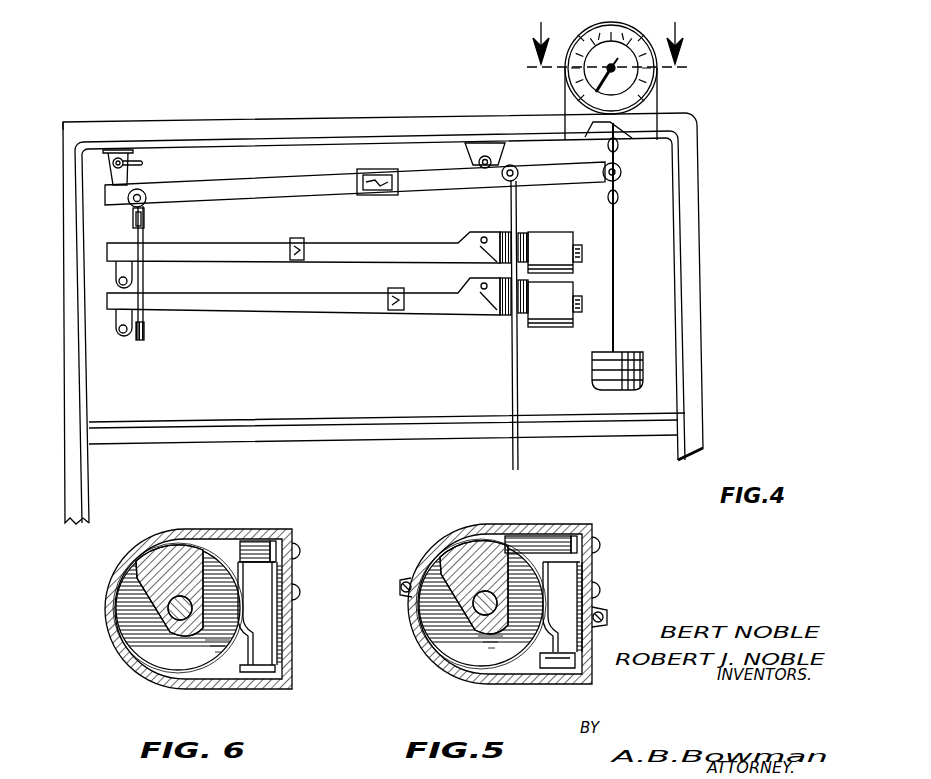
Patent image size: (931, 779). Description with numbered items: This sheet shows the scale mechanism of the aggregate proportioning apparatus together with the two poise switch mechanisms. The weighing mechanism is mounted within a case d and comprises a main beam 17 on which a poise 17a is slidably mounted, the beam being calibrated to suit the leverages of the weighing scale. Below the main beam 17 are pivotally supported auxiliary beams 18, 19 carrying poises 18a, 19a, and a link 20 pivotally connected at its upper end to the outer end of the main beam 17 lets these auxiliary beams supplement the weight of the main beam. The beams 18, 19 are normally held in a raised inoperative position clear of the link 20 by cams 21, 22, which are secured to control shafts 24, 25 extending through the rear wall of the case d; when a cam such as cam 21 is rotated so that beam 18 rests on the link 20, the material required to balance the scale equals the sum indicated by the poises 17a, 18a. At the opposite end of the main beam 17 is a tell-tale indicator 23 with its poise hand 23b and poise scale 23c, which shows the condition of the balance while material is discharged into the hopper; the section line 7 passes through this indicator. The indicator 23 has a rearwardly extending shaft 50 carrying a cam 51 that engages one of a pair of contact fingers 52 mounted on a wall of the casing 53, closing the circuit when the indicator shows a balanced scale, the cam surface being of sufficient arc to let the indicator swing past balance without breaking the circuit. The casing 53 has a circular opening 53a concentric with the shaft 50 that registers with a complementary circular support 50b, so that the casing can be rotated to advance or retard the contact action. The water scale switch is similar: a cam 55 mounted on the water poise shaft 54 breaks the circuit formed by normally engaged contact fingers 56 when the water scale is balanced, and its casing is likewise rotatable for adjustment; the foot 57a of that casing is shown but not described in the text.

In FIG. 4, the case d is at (186, 134).
In FIG. 4, the section line 7- 7 is at (607, 44).
In FIG. 4, the main scale beam 17 is at (297, 181).
In FIG. 4, the poise 17a is at (378, 170).
In FIG. 4, the auxiliary beam 18 is at (342, 247).
In FIG. 4, the poise 18a is at (296, 242).
In FIG. 4, the auxiliary beam 19 is at (320, 293).
In FIG. 4, the poise 19a is at (400, 290).
In FIG. 4, the beam link 20 is at (146, 338).
In FIG. 4, the beam reset cam 21 is at (137, 256).
In FIG. 4, the beam reset cam 22 is at (137, 312).
In FIG. 4, the tell-tale indicator 23 is at (575, 74).
In FIG. 4, the poise hand 23b is at (592, 96).
In FIG. 4, the poise scale 23c is at (625, 47).
In FIG. 4, the control shaft 24 is at (140, 279).
In FIG. 4, the control shaft 25 is at (124, 332).
In FIG. 6, the aggregate poise shaft 50 is at (128, 666).
In FIG. 6, the circular support 50b is at (188, 664).
In FIG. 6, the cam 51 is at (202, 533).
In FIG. 6, the contact fingers 52 is at (275, 628).
In FIG. 6, the casing 53 is at (258, 530).
In FIG. 6, the circular opening 53a is at (156, 672).
In FIG. 5, the water poise shaft 54 is at (472, 620).
In FIG. 5, the cam 55 is at (490, 537).
In FIG. 5, the contact fingers 56 is at (590, 645).
In FIG. 5, the tube foot 57a is at (515, 660).